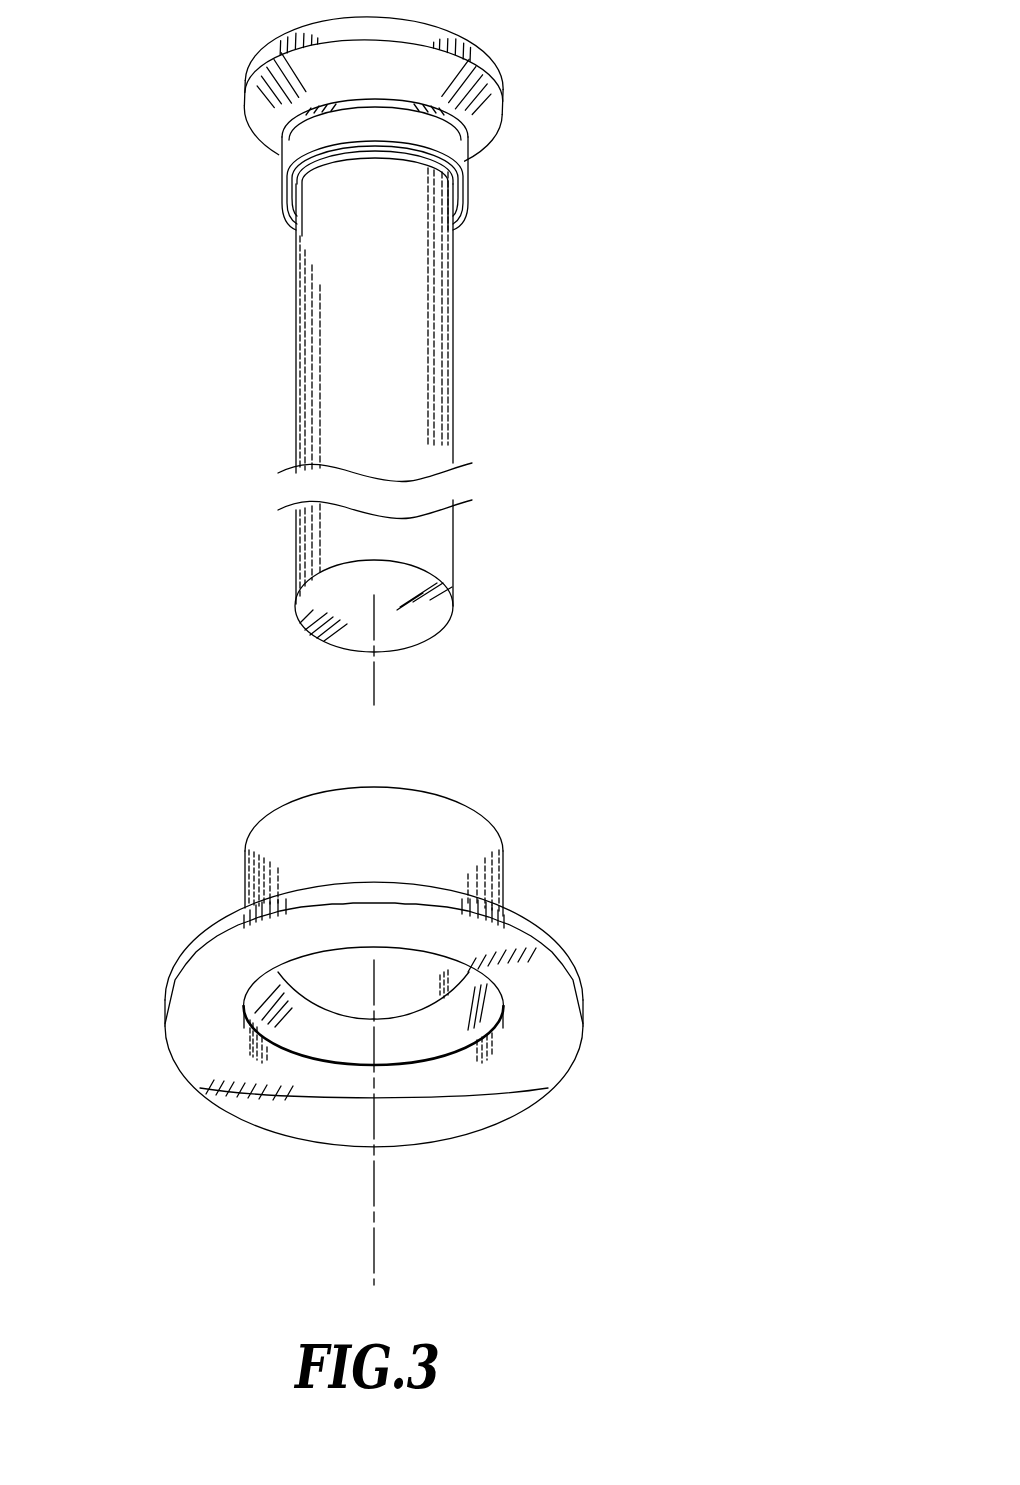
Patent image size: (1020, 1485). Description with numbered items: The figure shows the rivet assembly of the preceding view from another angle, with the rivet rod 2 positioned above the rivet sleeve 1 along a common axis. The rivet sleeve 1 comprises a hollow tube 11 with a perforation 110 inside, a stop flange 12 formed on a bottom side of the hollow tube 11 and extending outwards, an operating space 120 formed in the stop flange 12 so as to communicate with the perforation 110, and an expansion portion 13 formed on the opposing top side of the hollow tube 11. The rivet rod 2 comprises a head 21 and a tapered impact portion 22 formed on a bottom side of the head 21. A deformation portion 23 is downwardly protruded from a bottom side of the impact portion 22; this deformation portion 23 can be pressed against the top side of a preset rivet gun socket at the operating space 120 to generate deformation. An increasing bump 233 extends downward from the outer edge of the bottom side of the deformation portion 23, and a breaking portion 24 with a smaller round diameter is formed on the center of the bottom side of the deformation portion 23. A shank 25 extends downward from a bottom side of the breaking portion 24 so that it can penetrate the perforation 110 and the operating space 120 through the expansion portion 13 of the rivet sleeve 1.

The rivet sleeve 1 is at (172, 930).
The hollow tube 11 is at (490, 898).
The stop flange 12 is at (540, 985).
The expansion portion 13 is at (455, 800).
The perforation 110 is at (394, 994).
The operating space 120 is at (320, 1027).
The rivet rod 2 is at (280, 306).
The head 21 is at (464, 36).
The tapered impact portion 22 is at (476, 117).
The deformation portion 23 is at (457, 153).
The increasing bump 233 is at (470, 207).
The breaking portion 24 is at (382, 153).
The shank 25 is at (412, 405).